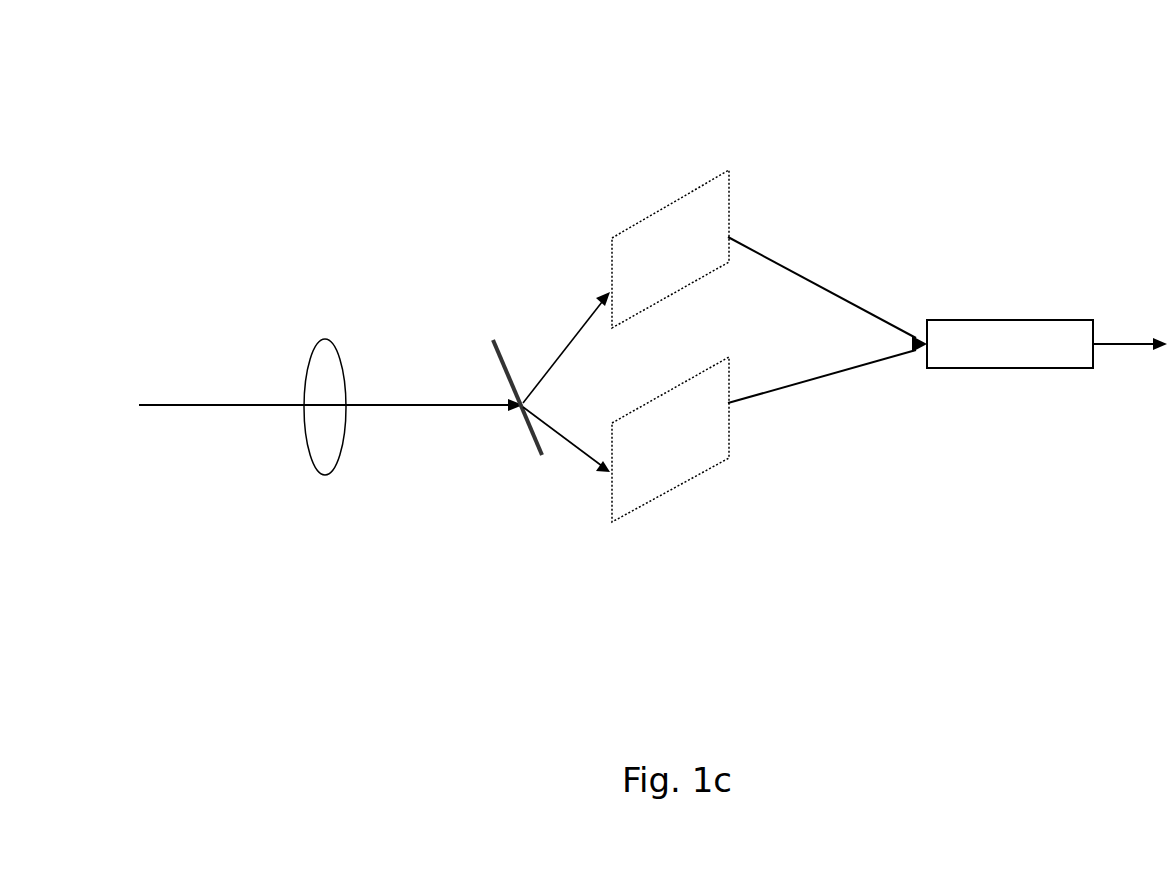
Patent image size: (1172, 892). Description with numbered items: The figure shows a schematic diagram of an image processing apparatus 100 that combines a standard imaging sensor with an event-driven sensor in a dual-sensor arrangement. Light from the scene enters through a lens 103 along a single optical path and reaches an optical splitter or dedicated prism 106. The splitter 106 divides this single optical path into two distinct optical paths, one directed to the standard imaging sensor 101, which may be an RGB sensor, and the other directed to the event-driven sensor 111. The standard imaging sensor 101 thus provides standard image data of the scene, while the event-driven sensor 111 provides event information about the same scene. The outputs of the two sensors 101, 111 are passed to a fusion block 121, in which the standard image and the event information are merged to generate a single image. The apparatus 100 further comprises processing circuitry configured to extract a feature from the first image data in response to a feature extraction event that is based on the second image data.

The image processing apparatus 100 is at (282, 127).
The standard imaging sensor 101 is at (648, 210).
The lens 103 is at (303, 377).
The optical splitter 106 is at (493, 335).
The event-driven sensor 111 is at (625, 517).
The fusion block 121 is at (997, 320).